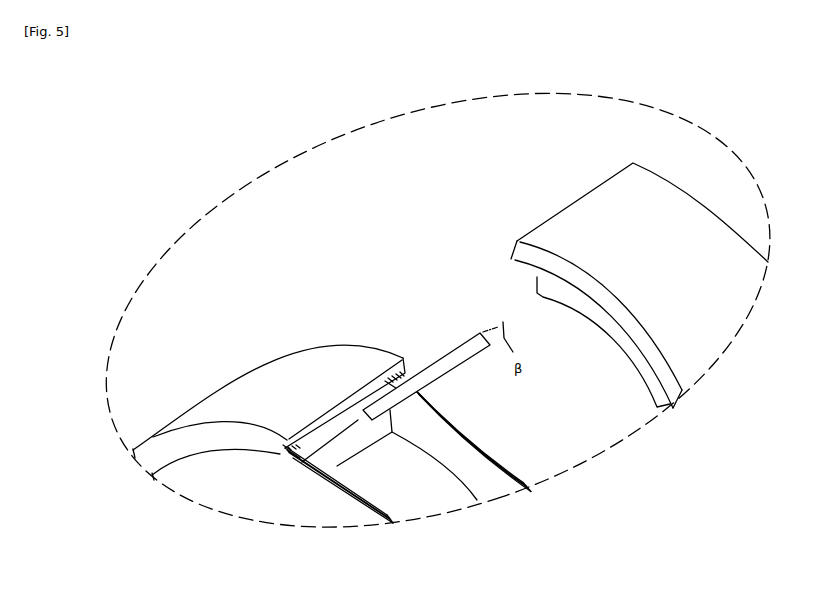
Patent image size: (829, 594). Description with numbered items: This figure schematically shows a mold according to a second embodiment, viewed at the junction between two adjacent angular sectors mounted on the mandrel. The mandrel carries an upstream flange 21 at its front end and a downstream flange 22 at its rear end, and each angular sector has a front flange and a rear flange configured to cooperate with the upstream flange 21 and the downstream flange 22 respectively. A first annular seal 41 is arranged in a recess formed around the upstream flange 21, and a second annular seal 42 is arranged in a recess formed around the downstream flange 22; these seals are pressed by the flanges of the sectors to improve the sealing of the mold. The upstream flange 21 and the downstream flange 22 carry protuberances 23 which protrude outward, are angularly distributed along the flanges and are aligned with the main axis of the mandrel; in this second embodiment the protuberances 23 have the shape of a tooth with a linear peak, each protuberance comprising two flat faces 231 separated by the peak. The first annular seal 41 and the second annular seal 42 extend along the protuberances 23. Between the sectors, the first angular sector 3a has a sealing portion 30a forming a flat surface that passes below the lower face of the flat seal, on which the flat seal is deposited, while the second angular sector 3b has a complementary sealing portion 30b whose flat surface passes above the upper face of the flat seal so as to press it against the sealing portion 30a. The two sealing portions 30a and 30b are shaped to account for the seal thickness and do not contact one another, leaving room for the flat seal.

The first angular sector 3a is at (270, 370).
The second angular sector 3b is at (601, 211).
The sealing portion of the first angular sector 30a is at (343, 422).
The sealing portion of the second angular sector 30b is at (513, 264).
The flat faces 231 is at (403, 357).
The protuberances 23 is at (270, 470).
The upstream flange 21 is at (323, 493).
The downstream flange 22 is at (510, 457).
The first annular seal 41 is at (356, 500).
The second annular seal 42 is at (467, 423).